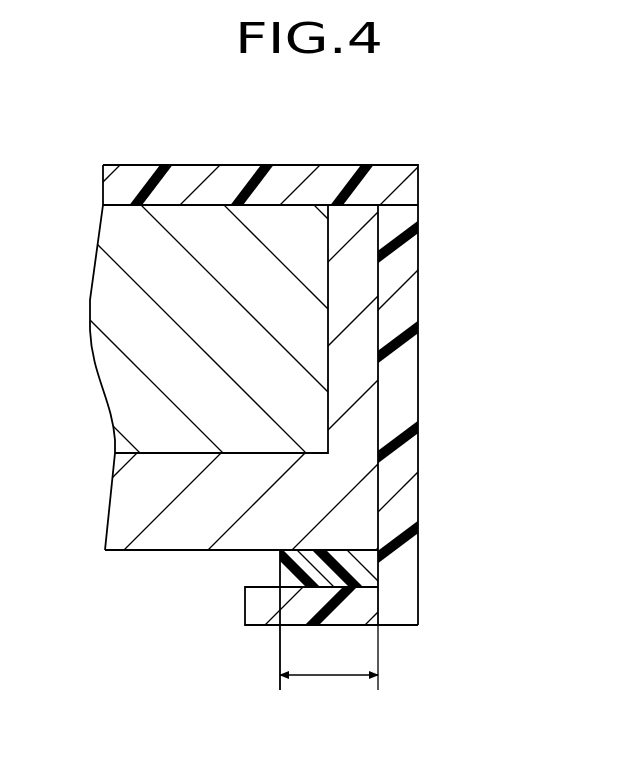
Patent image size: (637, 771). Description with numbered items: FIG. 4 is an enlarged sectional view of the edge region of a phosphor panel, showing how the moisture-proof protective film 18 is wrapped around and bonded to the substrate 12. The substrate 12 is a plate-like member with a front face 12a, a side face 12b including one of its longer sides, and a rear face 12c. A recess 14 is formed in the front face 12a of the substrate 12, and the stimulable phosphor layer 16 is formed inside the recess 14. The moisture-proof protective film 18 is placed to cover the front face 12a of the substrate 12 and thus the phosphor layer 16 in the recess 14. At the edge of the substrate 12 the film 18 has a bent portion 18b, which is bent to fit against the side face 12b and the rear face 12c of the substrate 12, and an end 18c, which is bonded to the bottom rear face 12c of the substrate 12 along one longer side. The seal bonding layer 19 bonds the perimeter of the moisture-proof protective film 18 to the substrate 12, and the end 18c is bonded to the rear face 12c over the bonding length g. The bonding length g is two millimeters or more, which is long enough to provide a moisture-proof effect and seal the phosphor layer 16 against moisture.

The substrate 12 is at (177, 552).
The front face 12a is at (393, 165).
The side face 12b is at (380, 345).
The rear face 12c is at (133, 552).
The recess 14 is at (328, 275).
The stimulable phosphor layer 16 is at (118, 272).
The moisture-proof protective film 18 is at (230, 180).
The bent portion 18b is at (397, 460).
The end 18c is at (353, 603).
The seal bonding layer 19 is at (280, 567).
The bonding length g is at (329, 666).